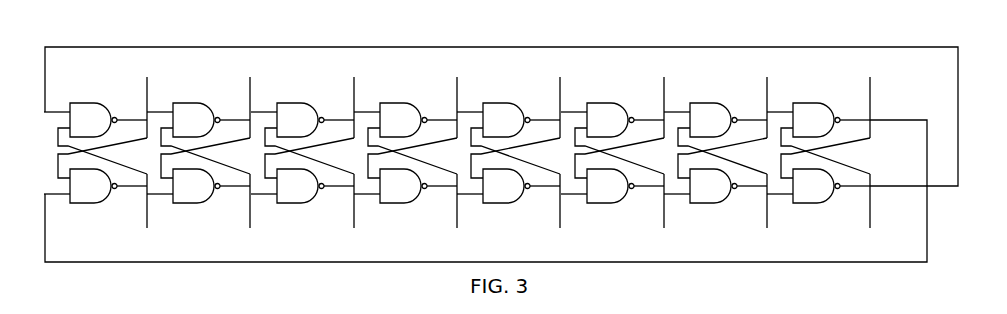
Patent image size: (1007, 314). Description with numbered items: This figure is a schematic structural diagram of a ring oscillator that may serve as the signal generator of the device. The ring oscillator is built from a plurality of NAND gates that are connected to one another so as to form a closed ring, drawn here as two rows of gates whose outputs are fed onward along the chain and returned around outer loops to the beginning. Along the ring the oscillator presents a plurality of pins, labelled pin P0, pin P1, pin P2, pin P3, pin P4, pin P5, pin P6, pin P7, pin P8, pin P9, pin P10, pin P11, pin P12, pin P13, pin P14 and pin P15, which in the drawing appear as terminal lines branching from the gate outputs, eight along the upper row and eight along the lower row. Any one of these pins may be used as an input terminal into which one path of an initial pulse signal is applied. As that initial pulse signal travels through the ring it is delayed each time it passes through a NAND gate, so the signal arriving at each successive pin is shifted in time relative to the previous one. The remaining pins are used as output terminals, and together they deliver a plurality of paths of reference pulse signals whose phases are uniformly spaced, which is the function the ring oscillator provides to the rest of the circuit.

The pin P0 is at (162, 205).
The pin P1 is at (268, 105).
The pin P2 is at (375, 207).
The pin P3 is at (475, 107).
The pin P4 is at (577, 207).
The pin P5 is at (681, 107).
The pin P6 is at (784, 209).
The pin P7 is at (889, 107).
The pin P8 is at (164, 105).
The pin P9 is at (266, 205).
The pin P10 is at (378, 107).
The pin P11 is at (480, 207).
The pin P12 is at (584, 107).
The pin P13 is at (686, 208).
The pin P14 is at (789, 107).
The pin P15 is at (893, 209).